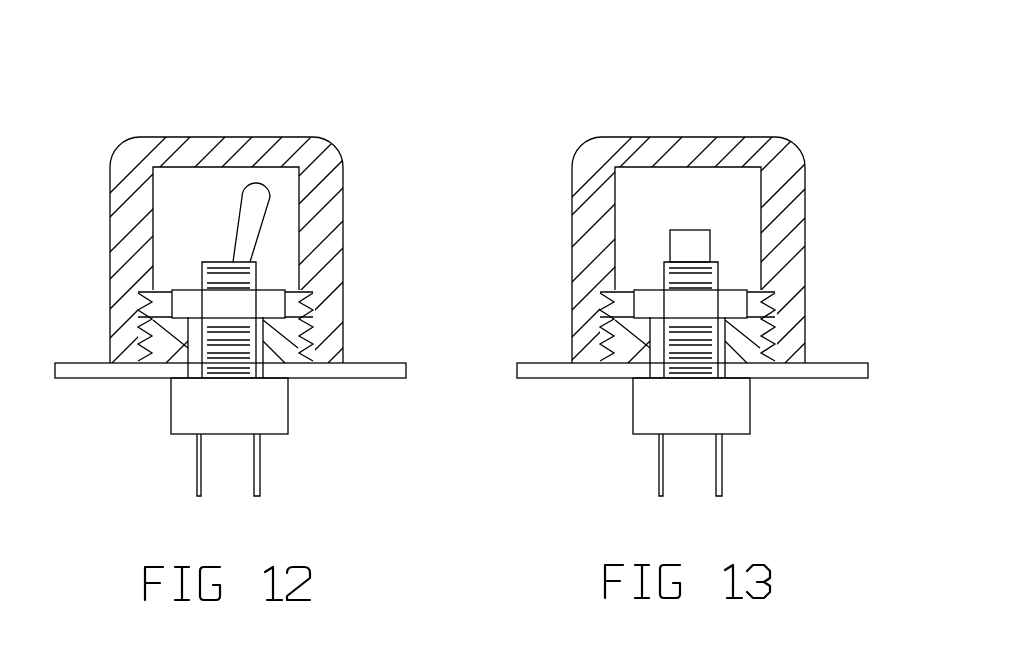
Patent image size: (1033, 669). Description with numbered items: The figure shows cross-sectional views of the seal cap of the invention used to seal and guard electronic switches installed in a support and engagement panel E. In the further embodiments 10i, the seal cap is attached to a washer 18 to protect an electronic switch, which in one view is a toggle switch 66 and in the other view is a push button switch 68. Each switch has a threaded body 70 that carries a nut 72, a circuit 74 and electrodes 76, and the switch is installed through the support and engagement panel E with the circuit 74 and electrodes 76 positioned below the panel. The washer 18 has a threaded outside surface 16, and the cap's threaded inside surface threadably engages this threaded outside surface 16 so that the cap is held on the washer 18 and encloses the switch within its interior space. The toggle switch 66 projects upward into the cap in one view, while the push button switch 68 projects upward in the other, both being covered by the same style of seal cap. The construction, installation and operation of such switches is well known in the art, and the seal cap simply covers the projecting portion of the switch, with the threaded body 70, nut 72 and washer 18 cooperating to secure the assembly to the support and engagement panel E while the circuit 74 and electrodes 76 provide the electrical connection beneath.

In FIG. 12, the embodiment 10i is at (292, 102).
In FIG. 13, the embodiment 10i is at (701, 90).
In FIG. 12, the threaded outside surface 16 is at (200, 147).
In FIG. 13, the threaded outside surface 16 is at (662, 148).
In FIG. 12, the toggle switch 66 is at (283, 226).
In FIG. 13, the push button switch 68 is at (724, 243).
In FIG. 12, the threaded body 70 is at (237, 280).
In FIG. 13, the threaded body 70 is at (690, 273).
In FIG. 12, the nut 72 is at (273, 303).
In FIG. 13, the nut 72 is at (653, 305).
In FIG. 12, the washer 18 is at (287, 340).
In FIG. 13, the washer 18 is at (747, 337).
In FIG. 12, the support and engagement panel E is at (352, 372).
In FIG. 13, the support and engagement panel E is at (820, 364).
In FIG. 12, the circuit 74 is at (253, 415).
In FIG. 13, the circuit 74 is at (727, 398).
In FIG. 12, the electrodes 76 is at (272, 480).
In FIG. 13, the electrodes 76 is at (734, 473).